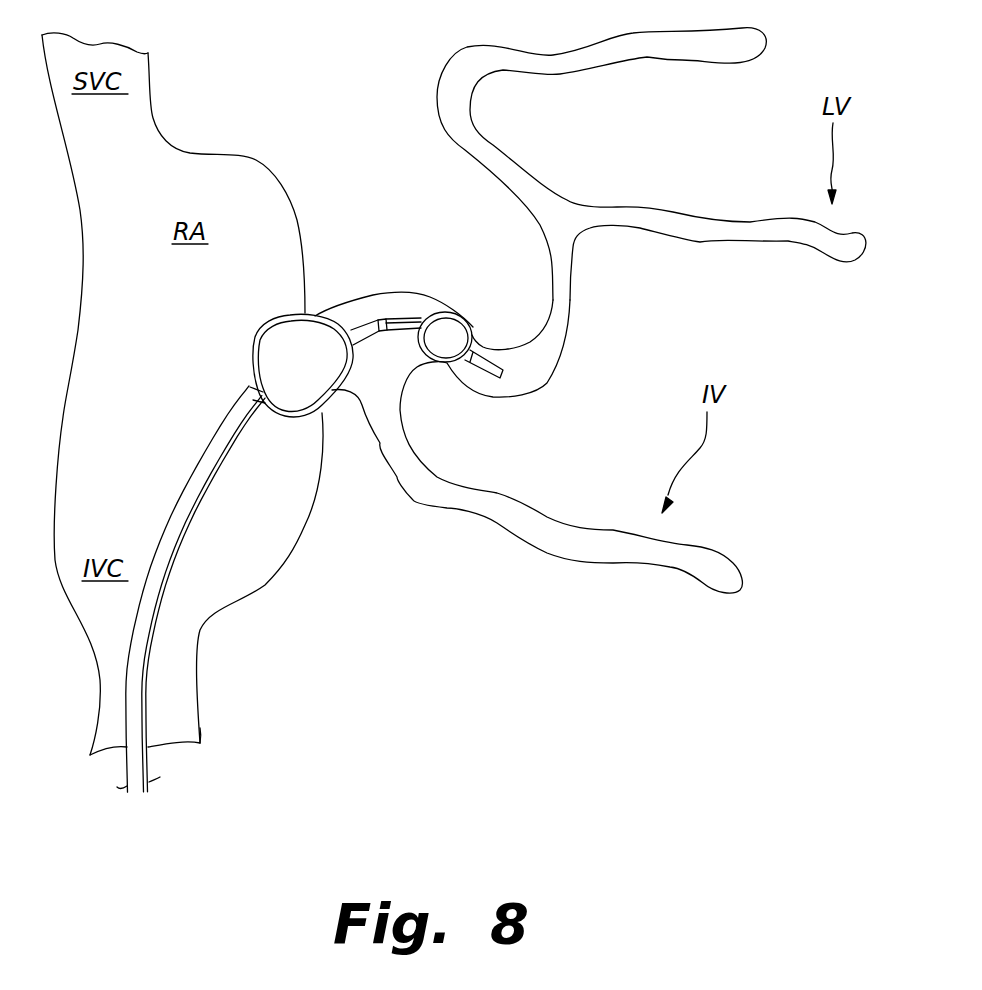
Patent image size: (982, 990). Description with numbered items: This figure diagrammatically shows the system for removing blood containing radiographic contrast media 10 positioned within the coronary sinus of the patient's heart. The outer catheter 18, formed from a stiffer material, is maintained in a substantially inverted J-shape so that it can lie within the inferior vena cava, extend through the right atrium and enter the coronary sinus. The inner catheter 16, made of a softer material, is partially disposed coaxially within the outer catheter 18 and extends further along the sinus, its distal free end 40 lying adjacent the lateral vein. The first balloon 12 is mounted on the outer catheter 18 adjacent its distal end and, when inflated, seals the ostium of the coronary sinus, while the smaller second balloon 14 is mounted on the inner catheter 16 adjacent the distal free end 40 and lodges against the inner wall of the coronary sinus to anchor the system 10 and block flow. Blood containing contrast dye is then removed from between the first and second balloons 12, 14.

The system for removing blood containing radiographic contrast media 10 is at (158, 382).
The first balloon 12 is at (256, 333).
The second balloon 14 is at (440, 313).
The inner catheter 16 is at (388, 320).
The outer catheter 18 is at (173, 510).
The distal free end 40 is at (513, 377).